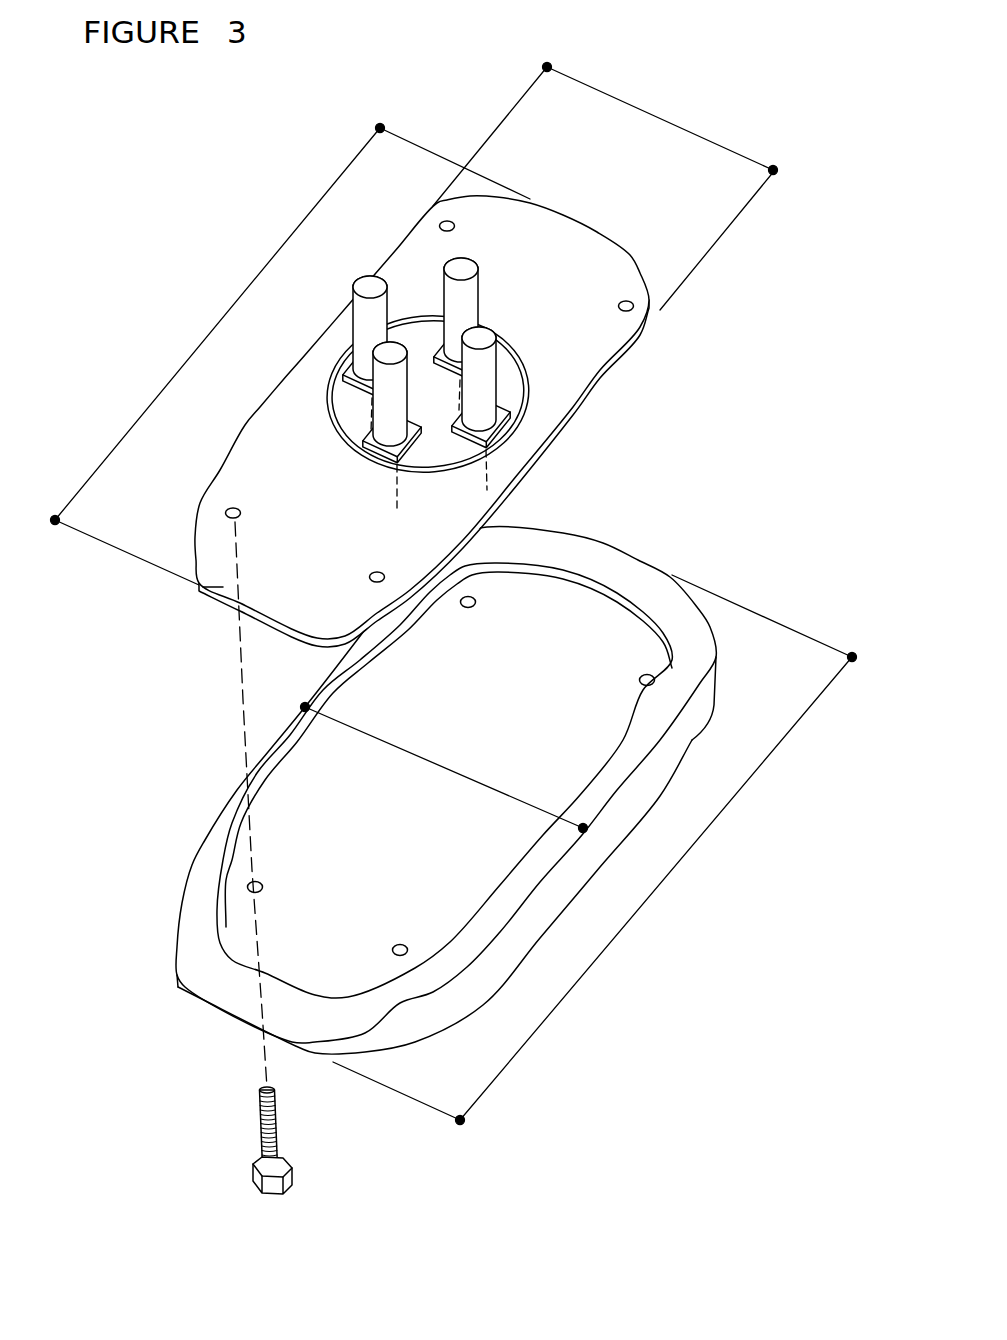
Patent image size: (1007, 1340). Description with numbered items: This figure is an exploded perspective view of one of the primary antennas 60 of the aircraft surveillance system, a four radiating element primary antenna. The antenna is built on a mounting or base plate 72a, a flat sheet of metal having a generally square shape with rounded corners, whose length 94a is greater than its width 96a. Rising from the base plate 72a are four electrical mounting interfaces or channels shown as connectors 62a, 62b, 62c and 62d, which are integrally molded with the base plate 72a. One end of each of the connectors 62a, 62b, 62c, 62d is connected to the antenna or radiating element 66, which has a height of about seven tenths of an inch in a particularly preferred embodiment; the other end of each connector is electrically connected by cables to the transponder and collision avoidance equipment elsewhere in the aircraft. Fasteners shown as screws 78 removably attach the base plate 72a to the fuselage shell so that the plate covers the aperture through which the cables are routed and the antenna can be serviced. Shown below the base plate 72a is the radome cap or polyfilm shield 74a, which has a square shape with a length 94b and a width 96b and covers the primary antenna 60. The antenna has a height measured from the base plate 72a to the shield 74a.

The primary antenna 60 is at (421, 110).
The connector 62a is at (357, 276).
The connector 62b is at (473, 262).
The connector 62c is at (497, 333).
The connector 62d is at (367, 345).
The radiating element 66 is at (393, 397).
The base plate 72a is at (197, 585).
The shield 74a is at (238, 792).
The screw 78 is at (252, 1158).
The length 94a is at (263, 270).
The length 94b is at (597, 960).
The width 96a is at (623, 98).
The width 96b is at (457, 768).